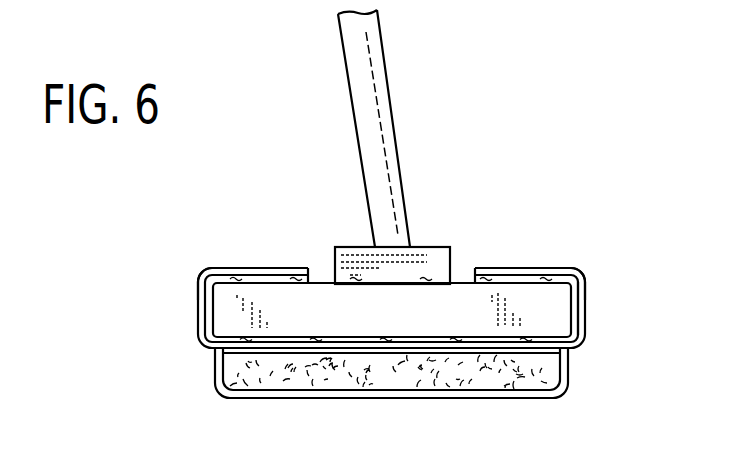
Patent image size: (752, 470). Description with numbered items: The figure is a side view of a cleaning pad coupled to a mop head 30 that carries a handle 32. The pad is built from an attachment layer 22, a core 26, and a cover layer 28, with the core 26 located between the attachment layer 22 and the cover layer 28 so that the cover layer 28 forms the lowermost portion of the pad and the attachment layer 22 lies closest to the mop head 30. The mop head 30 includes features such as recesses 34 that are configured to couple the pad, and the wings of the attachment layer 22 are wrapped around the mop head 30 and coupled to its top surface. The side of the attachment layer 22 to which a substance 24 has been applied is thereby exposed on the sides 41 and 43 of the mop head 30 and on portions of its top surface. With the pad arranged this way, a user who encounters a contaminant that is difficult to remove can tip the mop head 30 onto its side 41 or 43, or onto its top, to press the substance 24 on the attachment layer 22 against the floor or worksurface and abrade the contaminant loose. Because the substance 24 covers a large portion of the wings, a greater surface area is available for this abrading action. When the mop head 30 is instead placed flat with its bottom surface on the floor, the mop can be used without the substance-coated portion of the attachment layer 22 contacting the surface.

The attachment layer 22 is at (250, 285).
The substance 24 is at (358, 299).
The core 26 is at (250, 368).
The cover layer 28 is at (283, 398).
The mop head 30 is at (322, 283).
The handle 32 is at (373, 118).
The recesses 34 is at (237, 255).
The side 41 is at (575, 301).
The side 43 is at (204, 296).